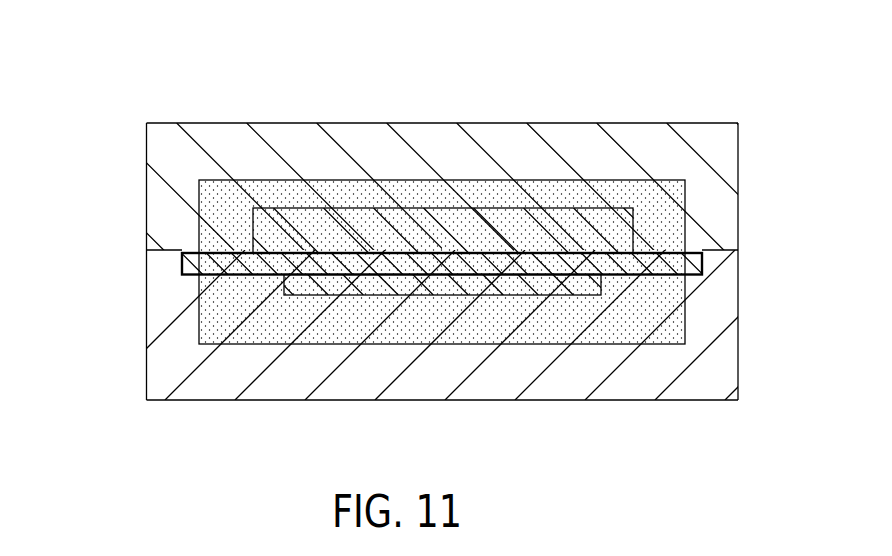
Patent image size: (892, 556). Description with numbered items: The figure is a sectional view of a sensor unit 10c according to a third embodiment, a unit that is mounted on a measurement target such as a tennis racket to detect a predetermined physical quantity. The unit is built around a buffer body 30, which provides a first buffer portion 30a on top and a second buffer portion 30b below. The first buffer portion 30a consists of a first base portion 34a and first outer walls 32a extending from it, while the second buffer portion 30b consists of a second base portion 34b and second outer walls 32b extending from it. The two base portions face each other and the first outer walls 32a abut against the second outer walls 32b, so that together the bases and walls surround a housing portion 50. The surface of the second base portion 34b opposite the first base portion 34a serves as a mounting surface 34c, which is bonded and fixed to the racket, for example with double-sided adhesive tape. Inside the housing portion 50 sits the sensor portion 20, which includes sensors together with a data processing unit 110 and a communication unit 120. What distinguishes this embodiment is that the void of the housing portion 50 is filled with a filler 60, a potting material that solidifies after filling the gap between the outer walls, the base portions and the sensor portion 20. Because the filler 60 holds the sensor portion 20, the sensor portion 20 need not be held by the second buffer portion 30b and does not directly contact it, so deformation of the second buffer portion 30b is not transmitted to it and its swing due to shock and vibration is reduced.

The sensor unit 10c is at (646, 57).
The sensor portion 20 is at (448, 218).
The buffer body 30 is at (70, 187).
The first buffer portion 30a is at (146, 202).
The second buffer portion 30b is at (146, 300).
The first outer wall 32a is at (722, 210).
The second outer wall 32b is at (722, 300).
The first base portion 34a is at (365, 123).
The second base portion 34b is at (360, 380).
The mounting surface 34c is at (467, 400).
The housing portion 50 is at (442, 263).
The filler 60 is at (558, 190).
The data processing unit 110 is at (441, 305).
The communication unit 120 is at (317, 293).